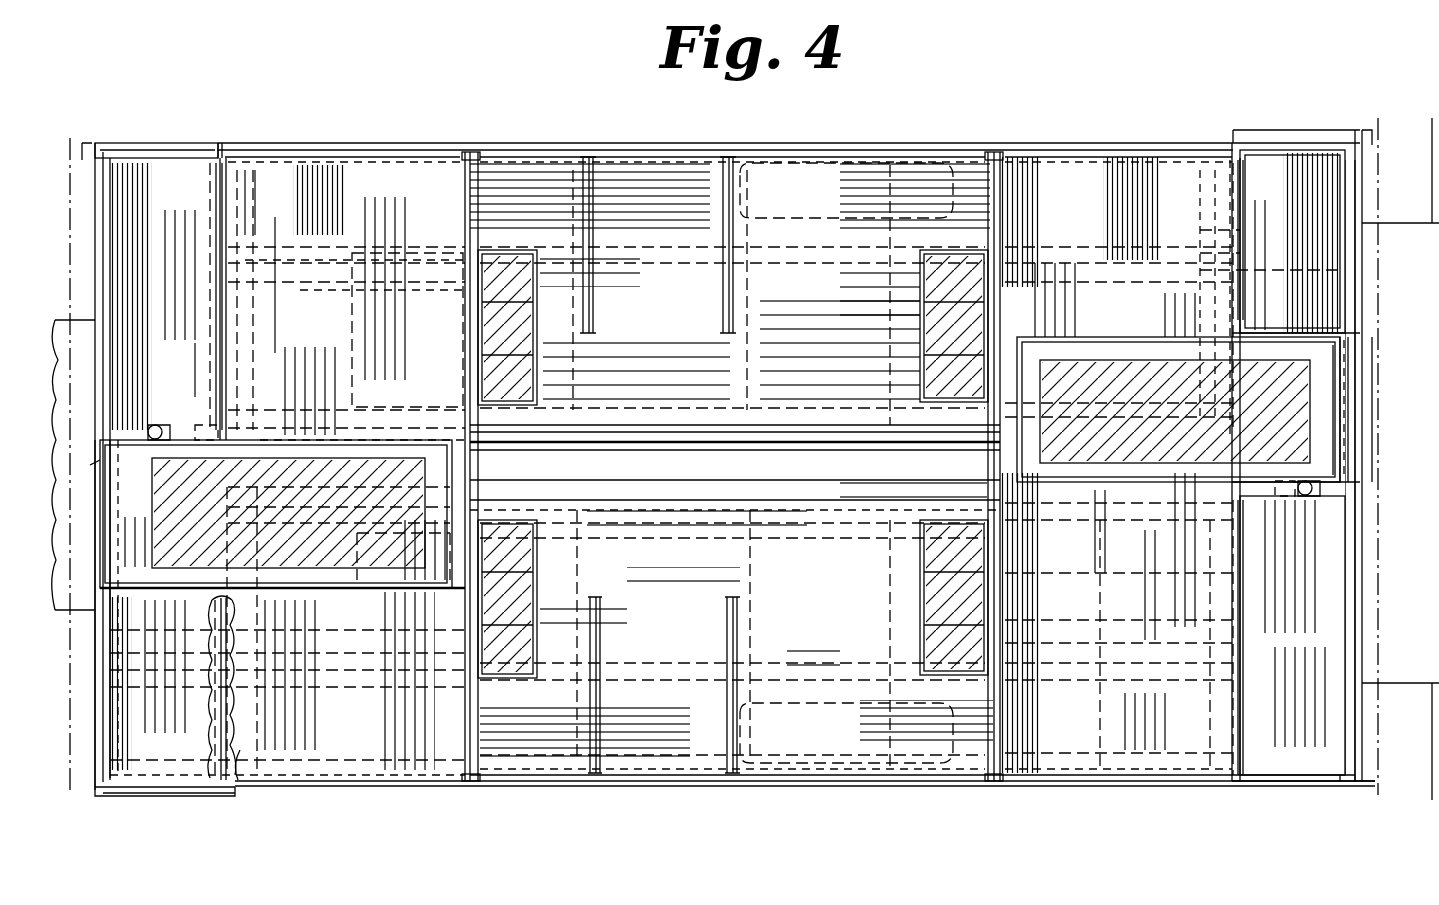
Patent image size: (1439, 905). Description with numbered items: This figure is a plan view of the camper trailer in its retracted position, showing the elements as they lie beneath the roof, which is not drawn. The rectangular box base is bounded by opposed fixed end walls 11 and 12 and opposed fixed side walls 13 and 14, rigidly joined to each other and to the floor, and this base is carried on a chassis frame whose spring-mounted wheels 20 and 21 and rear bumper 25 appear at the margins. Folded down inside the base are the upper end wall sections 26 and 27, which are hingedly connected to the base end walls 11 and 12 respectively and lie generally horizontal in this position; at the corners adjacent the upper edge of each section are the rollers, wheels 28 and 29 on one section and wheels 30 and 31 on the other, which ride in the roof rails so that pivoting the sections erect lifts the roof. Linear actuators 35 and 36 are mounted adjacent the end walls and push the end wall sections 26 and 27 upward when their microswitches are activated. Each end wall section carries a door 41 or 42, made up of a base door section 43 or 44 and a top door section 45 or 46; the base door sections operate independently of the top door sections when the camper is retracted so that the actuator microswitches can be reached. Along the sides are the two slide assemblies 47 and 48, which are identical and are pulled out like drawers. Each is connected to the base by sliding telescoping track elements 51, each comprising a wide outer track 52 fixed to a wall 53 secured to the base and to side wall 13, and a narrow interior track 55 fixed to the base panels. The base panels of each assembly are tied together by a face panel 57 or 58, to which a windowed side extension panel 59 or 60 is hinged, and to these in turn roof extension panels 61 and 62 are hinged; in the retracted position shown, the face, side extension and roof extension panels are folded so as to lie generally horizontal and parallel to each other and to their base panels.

The end wall 11 is at (95, 212).
The end wall 12 is at (1365, 186).
The side wall 13 is at (192, 797).
The side wall 14 is at (190, 142).
The wheel 20 is at (955, 163).
The wheel 21 is at (955, 773).
The rear bumper 25 is at (1438, 790).
The upper end wall section 26 is at (390, 200).
The upper end wall section 27 is at (1175, 180).
The wheel 28 is at (482, 150).
The wheel 29 is at (475, 783).
The wheel 30 is at (996, 150).
The wheel 31 is at (995, 783).
The linear actuator 35 is at (157, 424).
The linear actuator 36 is at (1310, 480).
The door 41 is at (105, 573).
The door 42 is at (1360, 370).
The base door section 43 is at (110, 503).
The base door section 44 is at (1365, 433).
The top door section 45 is at (150, 494).
The top door section 46 is at (1330, 403).
The slide assembly 47 is at (678, 802).
The slide assembly 48 is at (660, 140).
The sliding telescoping rail or track element 51 is at (216, 306).
The wide outer track 52 is at (222, 623).
The wall 53 is at (213, 216).
The narrow interior track 55 is at (240, 780).
The face panel 57 is at (580, 783).
The face panel 58 is at (565, 142).
The windowed side extension panel 59 is at (695, 738).
The windowed side extension panel 60 is at (680, 182).
The roof extension panel 61 is at (685, 493).
The roof extension panel 62 is at (850, 442).